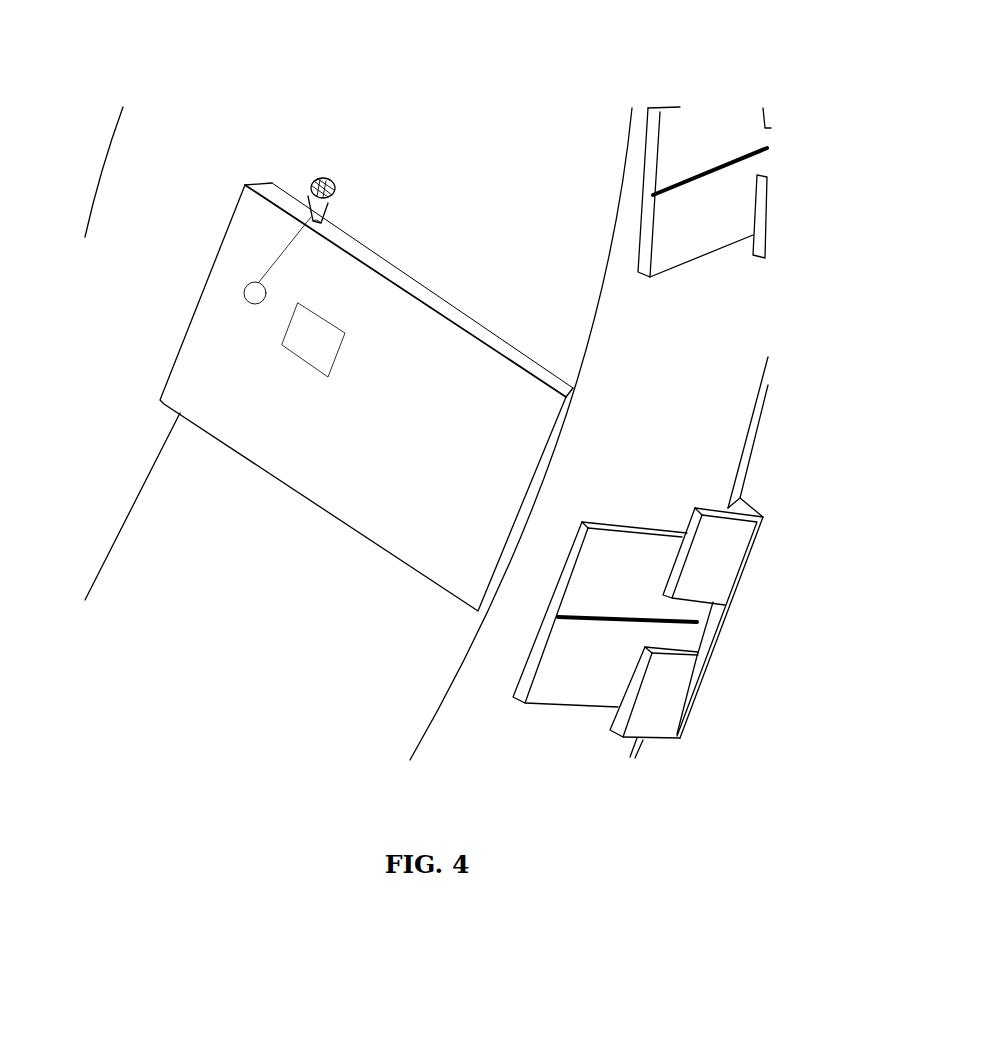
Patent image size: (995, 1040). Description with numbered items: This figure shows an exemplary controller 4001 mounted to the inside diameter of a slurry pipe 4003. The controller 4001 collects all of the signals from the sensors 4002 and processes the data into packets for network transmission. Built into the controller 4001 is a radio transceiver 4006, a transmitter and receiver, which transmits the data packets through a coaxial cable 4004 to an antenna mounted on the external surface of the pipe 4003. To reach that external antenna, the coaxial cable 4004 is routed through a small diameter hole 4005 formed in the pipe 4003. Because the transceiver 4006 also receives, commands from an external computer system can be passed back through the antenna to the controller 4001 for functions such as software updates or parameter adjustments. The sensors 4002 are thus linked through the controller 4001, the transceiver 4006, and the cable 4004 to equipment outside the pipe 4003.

The controller 4001 is at (390, 363).
The sensor 4002 is at (668, 543).
The pipe 4003 is at (187, 638).
The coaxial cable 4004 is at (257, 253).
The small diameter hole 4005 is at (332, 173).
The radio transceiver 4006 is at (320, 320).